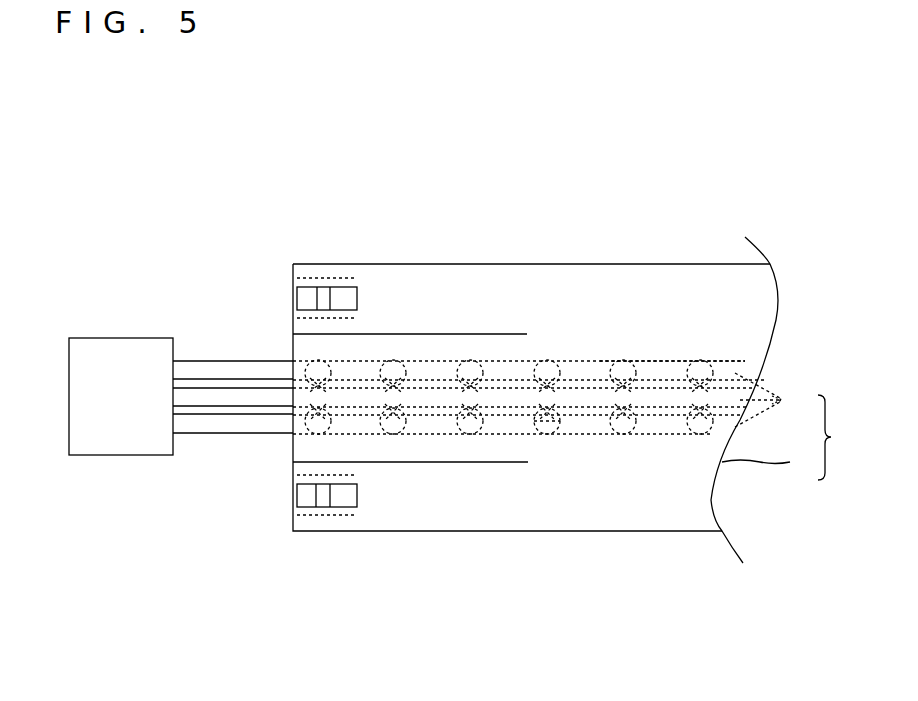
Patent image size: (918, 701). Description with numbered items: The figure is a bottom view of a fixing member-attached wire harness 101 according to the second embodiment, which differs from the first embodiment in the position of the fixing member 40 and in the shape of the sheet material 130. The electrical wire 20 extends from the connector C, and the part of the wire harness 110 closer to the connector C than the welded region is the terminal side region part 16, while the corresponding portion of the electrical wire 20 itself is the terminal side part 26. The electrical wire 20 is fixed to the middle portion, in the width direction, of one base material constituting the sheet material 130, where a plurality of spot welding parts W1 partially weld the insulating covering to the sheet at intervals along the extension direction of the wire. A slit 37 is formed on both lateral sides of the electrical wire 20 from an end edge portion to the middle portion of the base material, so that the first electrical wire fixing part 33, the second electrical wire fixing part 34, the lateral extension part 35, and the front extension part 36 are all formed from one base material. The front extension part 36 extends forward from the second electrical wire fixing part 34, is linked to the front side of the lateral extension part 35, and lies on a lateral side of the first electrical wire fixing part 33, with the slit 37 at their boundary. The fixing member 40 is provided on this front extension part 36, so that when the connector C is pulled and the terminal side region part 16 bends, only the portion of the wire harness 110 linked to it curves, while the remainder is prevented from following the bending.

The fixing member-attached wire harness 101 is at (210, 132).
The connector C is at (117, 447).
The terminal side region part 16 is at (230, 460).
The terminal side part 26 is at (247, 425).
The fixing member 40 is at (321, 287).
The slit 37 is at (416, 334).
The front extension part 36 is at (456, 277).
The first electrical wire fixing part 33 is at (502, 360).
The second electrical wire fixing part 34 is at (664, 360).
The lateral extension part 35 is at (705, 278).
The spot welding part W1 is at (545, 445).
The electrical wire 20 is at (777, 400).
The sheet material 130 is at (773, 463).
The wire harness 110 is at (847, 437).